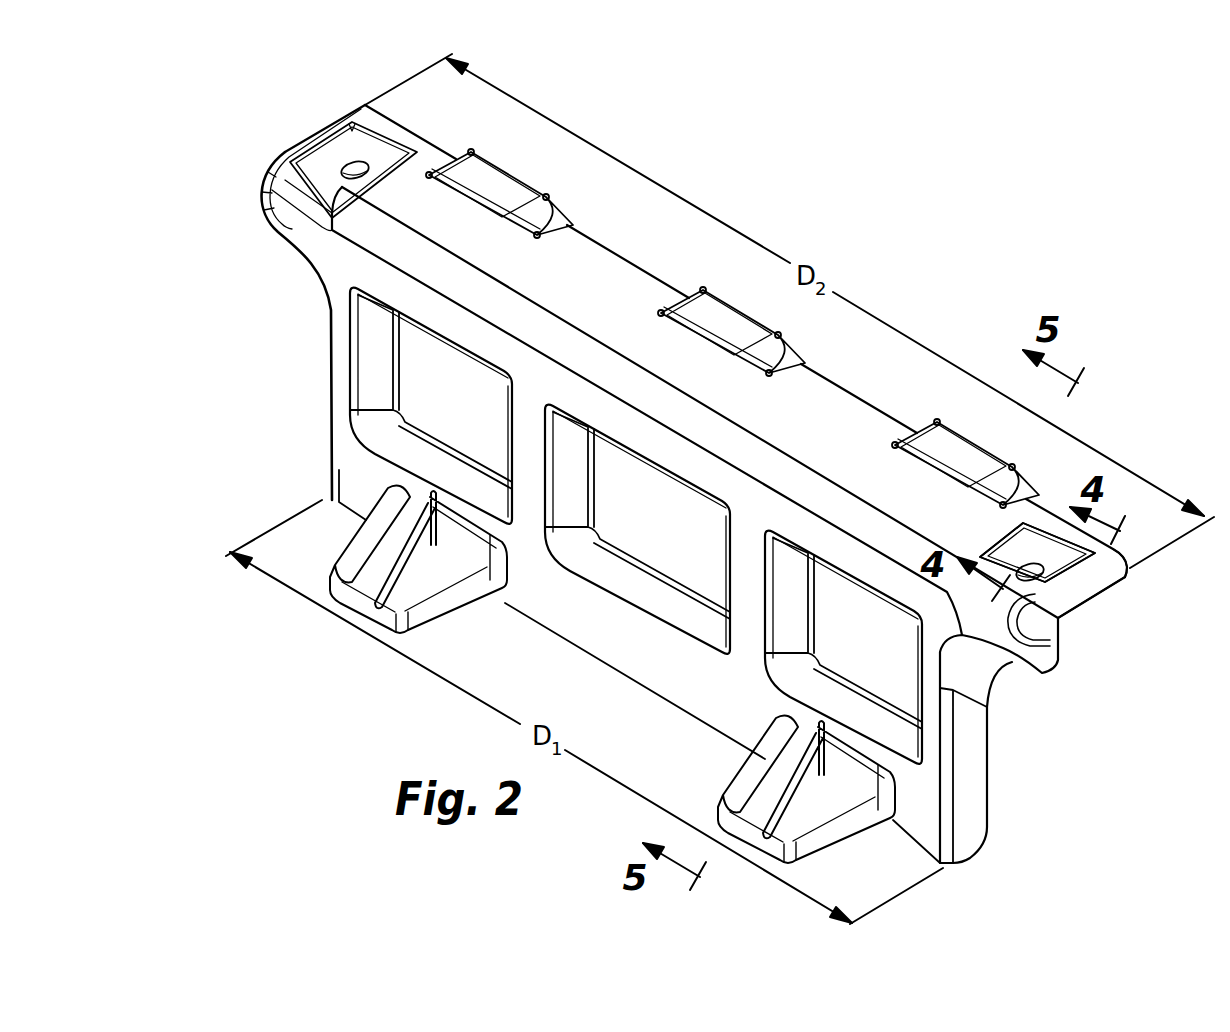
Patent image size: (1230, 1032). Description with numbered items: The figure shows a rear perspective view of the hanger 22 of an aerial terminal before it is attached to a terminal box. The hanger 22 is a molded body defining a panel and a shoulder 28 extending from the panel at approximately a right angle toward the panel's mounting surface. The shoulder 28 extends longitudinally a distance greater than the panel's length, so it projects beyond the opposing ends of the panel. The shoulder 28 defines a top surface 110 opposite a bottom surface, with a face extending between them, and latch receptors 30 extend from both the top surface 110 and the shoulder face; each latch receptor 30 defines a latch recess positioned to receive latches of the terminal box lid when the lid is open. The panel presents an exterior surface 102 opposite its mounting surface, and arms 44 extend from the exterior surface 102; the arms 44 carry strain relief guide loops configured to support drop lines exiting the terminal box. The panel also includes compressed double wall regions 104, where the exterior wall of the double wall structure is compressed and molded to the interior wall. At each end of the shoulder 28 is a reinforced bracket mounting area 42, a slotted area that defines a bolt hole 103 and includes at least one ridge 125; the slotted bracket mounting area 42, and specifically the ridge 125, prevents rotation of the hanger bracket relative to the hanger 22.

The hanger 22 is at (1123, 410).
The shoulder 28 is at (1089, 593).
The latch receptors 30 is at (507, 192).
The reinforced bracket mounting area 42 is at (318, 188).
The arms 44 is at (447, 603).
The exterior surface 102 is at (643, 680).
The bolt hole 103 is at (350, 166).
The compressed double wall region 104 is at (436, 417).
The top surface 110 is at (636, 277).
The ridge 125 is at (977, 553).